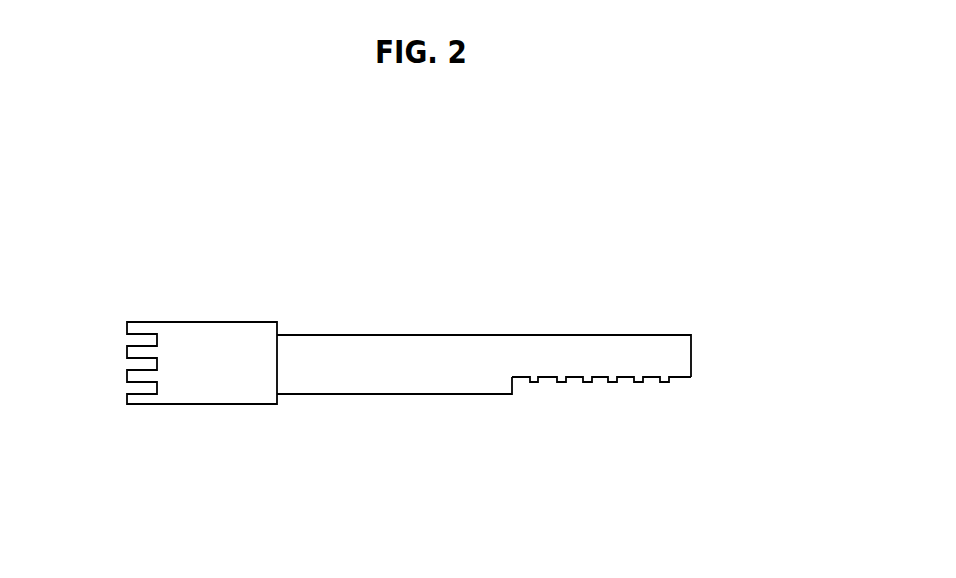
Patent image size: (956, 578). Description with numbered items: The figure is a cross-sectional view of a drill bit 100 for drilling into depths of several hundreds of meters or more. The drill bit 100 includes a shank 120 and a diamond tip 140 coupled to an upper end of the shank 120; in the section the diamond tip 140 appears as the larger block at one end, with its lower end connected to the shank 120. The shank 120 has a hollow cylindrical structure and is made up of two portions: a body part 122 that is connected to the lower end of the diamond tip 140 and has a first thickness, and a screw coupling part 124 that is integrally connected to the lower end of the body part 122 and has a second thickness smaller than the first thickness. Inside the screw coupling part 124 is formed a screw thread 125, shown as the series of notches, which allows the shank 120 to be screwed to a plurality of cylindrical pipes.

The drill bit 100 is at (686, 192).
The shank 120 is at (577, 240).
The body part 122 is at (449, 352).
The screw coupling part 124 is at (580, 352).
The screw thread 125 is at (558, 396).
The diamond tip 140 is at (214, 340).